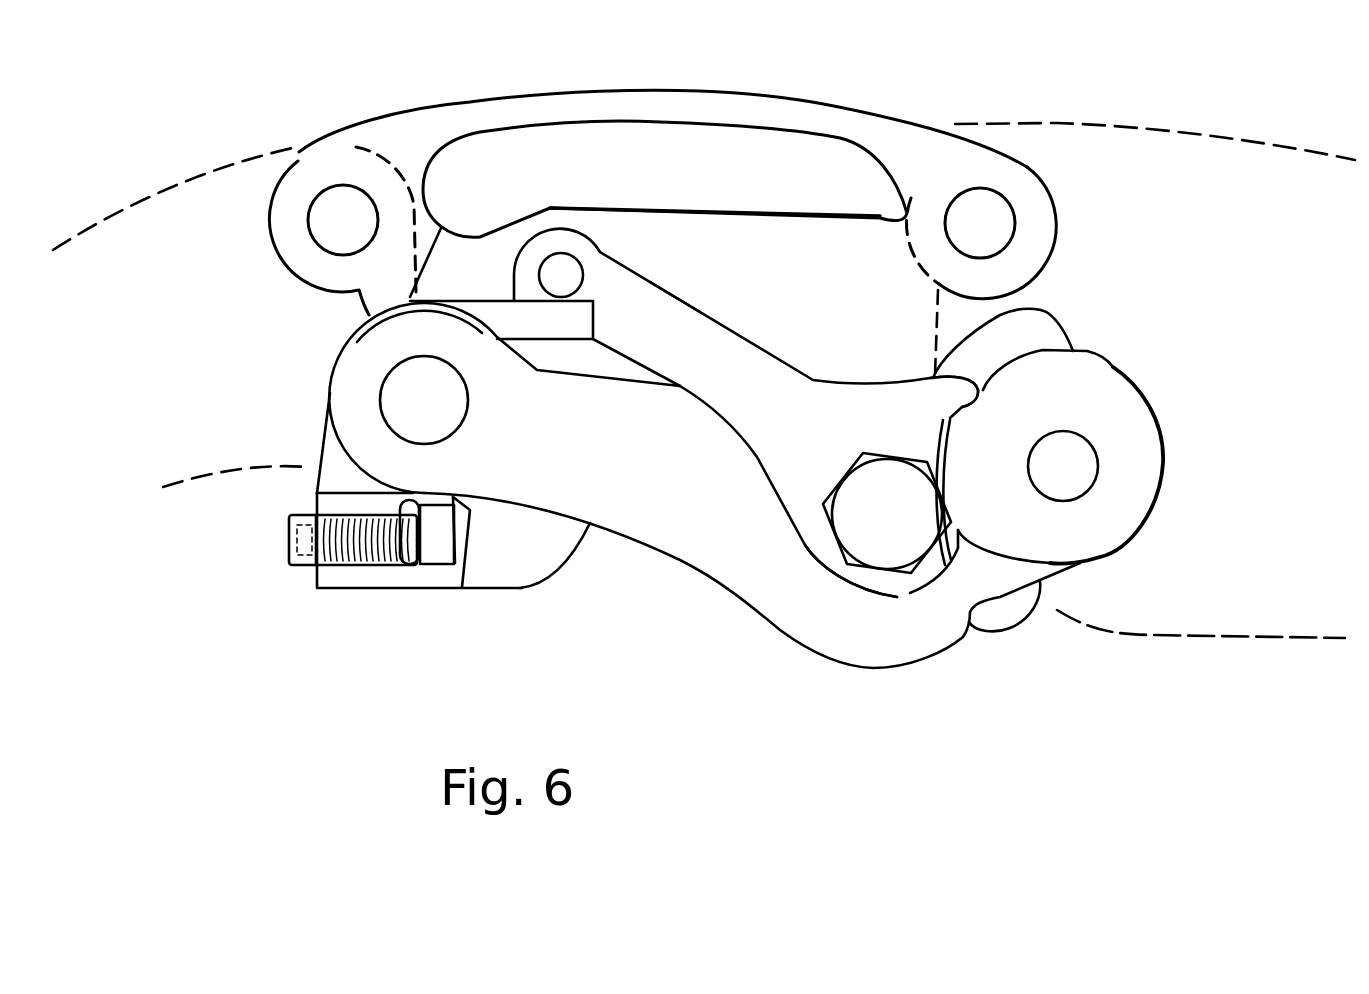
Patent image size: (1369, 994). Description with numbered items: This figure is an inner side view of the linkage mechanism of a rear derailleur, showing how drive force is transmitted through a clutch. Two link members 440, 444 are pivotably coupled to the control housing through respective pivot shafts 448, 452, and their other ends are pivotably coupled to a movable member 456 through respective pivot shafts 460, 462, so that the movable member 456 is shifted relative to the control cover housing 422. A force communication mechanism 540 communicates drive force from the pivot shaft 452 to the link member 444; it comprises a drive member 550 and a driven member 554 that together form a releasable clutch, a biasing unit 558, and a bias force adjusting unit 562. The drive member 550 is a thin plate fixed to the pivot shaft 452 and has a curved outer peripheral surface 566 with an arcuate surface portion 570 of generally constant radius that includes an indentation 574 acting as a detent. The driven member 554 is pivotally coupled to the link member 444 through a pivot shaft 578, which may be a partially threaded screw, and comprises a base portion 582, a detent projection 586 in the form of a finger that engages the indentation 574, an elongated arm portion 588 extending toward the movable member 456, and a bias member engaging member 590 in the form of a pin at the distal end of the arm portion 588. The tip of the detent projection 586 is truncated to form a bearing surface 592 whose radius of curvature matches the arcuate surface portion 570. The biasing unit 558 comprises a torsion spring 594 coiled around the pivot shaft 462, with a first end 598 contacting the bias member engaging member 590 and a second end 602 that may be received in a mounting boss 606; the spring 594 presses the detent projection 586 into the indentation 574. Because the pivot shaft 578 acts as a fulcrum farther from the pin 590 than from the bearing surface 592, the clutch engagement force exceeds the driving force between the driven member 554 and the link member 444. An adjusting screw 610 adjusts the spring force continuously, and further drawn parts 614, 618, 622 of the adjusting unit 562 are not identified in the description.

The control cover housing 422 is at (1201, 269).
The link member 440 is at (662, 176).
The link member 444 is at (752, 527).
The pivot shaft 448 is at (1000, 218).
The pivot shaft 452 is at (1063, 473).
The movable member 456 is at (58, 337).
The pivot shaft 460 is at (330, 213).
The pivot shaft 462 is at (410, 400).
The force communication mechanism 540 is at (745, 404).
The drive member 550 is at (1118, 435).
The driven member 554 is at (746, 287).
The biasing unit 558 is at (444, 390).
The bias force adjusting unit 562 is at (366, 594).
The curved outer peripheral surface 566 is at (1163, 463).
The arcuate surface portion 570 is at (1087, 347).
The indentation 574 is at (978, 405).
The pivot shaft 578 is at (863, 511).
The base portion 582 is at (823, 547).
The detent projection 586 is at (932, 376).
The elongated arm portion 588 is at (700, 313).
The bias member engaging member 590 is at (562, 273).
The bearing surface 592 is at (970, 402).
The torsion spring 594 is at (444, 398).
The first end 598 is at (515, 313).
The second end 602 is at (450, 540).
The mounting boss 606 is at (557, 550).
The adjusting screw 610 is at (312, 594).
The block 614 is at (437, 580).
The block base 618 is at (340, 588).
The threaded shaft 622 is at (390, 562).